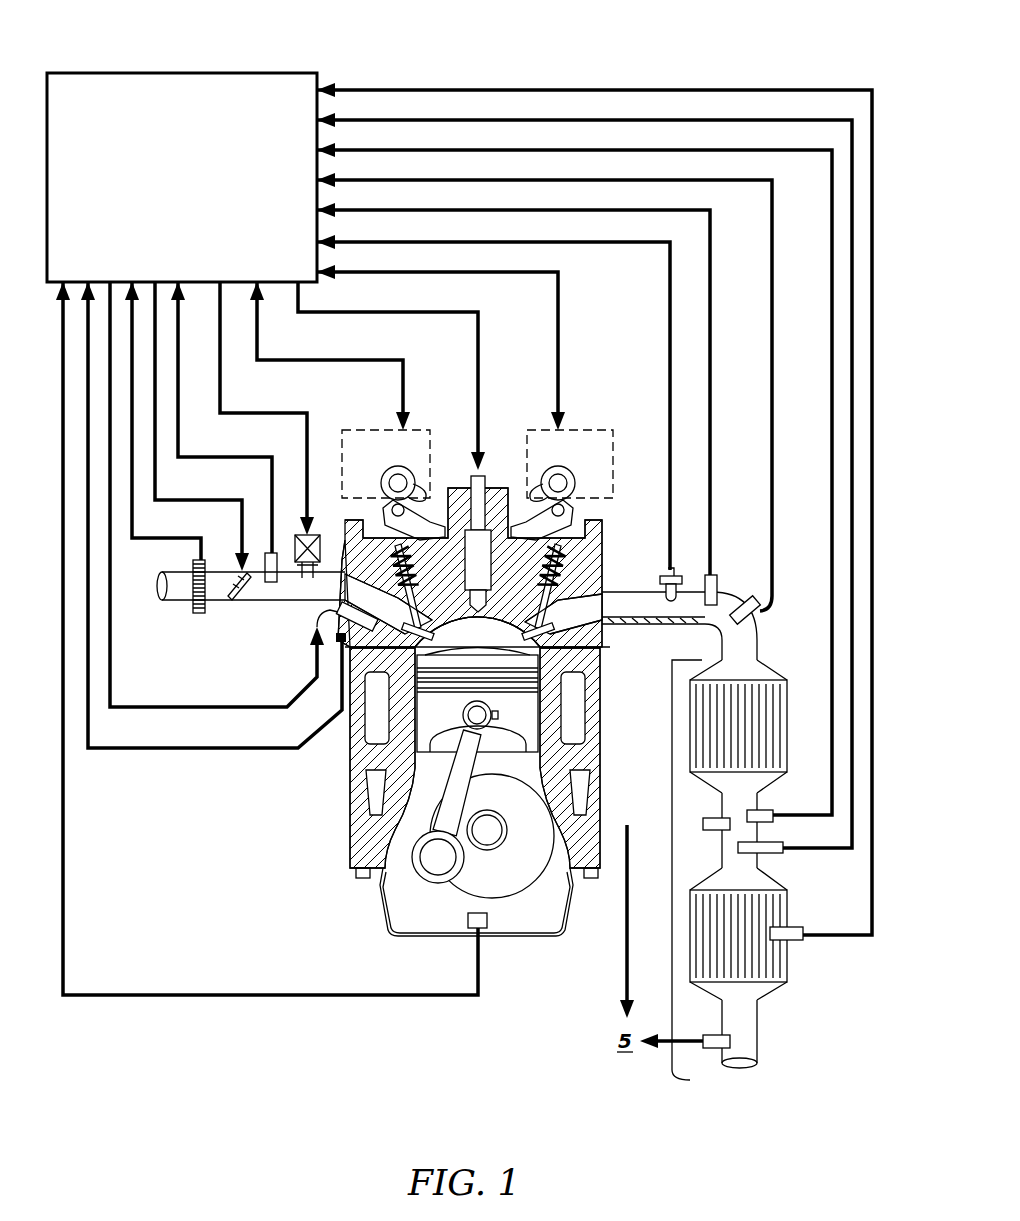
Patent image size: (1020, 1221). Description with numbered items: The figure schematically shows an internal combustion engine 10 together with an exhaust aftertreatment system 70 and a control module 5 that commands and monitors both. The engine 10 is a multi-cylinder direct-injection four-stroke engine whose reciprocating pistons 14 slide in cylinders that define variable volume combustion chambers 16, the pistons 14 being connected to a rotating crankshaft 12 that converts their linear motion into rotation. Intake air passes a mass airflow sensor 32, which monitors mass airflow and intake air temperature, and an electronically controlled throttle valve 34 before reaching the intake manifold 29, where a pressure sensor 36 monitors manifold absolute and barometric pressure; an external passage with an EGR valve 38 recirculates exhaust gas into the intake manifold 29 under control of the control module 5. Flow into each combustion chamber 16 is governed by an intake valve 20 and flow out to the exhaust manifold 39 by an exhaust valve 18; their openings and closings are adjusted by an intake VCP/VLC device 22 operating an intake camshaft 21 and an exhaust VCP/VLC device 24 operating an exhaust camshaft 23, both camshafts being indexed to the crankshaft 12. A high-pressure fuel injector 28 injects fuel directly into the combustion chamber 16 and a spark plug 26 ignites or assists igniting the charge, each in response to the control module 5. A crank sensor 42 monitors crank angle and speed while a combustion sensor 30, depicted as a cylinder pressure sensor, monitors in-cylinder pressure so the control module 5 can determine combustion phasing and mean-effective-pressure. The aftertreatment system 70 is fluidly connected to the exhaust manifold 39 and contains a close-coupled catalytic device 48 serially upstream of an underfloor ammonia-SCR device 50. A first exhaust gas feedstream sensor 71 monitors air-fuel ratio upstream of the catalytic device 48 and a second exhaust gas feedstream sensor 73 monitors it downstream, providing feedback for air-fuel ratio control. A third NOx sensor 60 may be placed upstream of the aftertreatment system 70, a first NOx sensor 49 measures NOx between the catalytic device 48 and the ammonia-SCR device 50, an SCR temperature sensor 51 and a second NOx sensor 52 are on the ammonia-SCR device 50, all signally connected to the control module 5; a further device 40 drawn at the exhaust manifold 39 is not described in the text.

The control module 5 is at (181, 73).
The internal combustion engine 10 is at (600, 750).
The crankshaft 12 is at (530, 880).
The piston 14 is at (503, 723).
The combustion chamber 16 is at (436, 648).
The exhaust valve 18 is at (606, 600).
The intake valve 20 is at (420, 608).
The intake camshaft 21 is at (412, 478).
The intake variable cam phasing/variable lift control device 22 is at (410, 432).
The exhaust camshaft 23 is at (566, 492).
The exhaust variable cam phasing/variable lift control device 24 is at (568, 436).
The spark plug 26 is at (489, 472).
The fuel injector 28 is at (316, 620).
The intake manifold 29 is at (335, 582).
The combustion sensor 30 is at (340, 652).
The mass airflow sensor 32 is at (195, 612).
The throttle valve 34 is at (233, 596).
The pressure sensor 36 is at (271, 585).
The exhaust gas recirculation valve 38 is at (305, 578).
The exhaust manifold 39 is at (602, 592).
The exhaust gas sensor 40 is at (674, 572).
The crank sensor 42 is at (470, 925).
The catalytic device 48 is at (792, 686).
The first NOx sensor 49 is at (712, 832).
The ammonia-SCR device 50 is at (795, 908).
The SCR temperature sensor 51 is at (790, 942).
The second NOx sensor 52 is at (712, 1050).
The third NOx sensor 60 is at (714, 580).
The exhaust aftertreatment system 70 is at (668, 762).
The first exhaust gas feedstream sensor 71 is at (762, 608).
The second exhaust gas feedstream sensor 73 is at (770, 810).